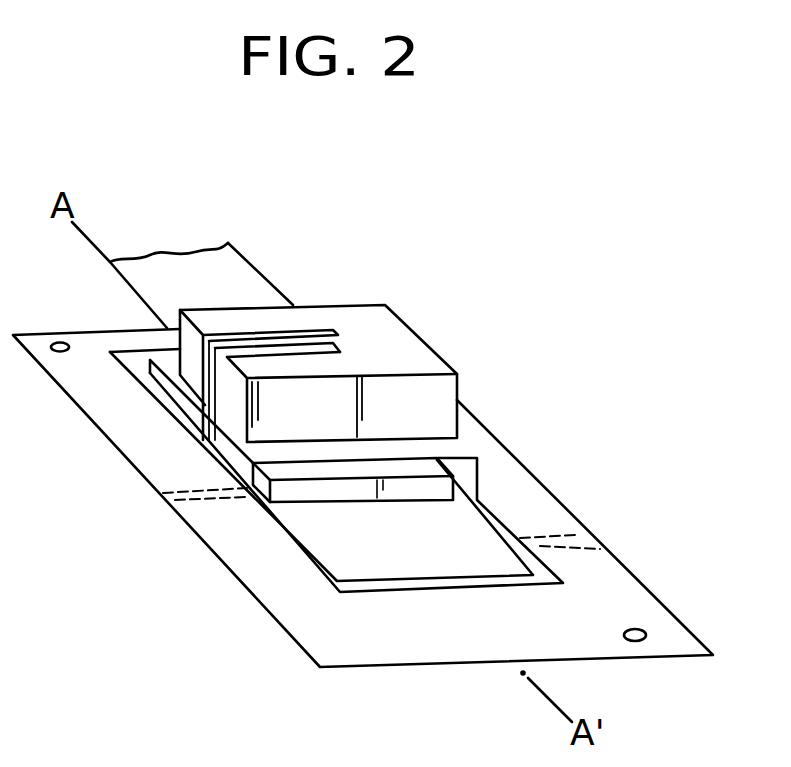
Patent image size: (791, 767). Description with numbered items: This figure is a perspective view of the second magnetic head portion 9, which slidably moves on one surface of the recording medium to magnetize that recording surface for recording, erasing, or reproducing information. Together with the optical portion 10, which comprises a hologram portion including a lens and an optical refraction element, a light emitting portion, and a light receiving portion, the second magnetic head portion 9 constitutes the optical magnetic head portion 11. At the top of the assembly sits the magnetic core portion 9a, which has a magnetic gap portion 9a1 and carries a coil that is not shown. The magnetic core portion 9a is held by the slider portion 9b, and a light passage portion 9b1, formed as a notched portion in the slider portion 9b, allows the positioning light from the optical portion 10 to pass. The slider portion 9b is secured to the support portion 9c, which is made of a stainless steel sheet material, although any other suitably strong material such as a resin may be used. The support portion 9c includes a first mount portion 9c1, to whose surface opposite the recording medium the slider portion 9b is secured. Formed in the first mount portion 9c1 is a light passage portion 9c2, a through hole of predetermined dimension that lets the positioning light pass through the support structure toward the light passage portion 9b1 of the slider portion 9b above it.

The second magnetic head portion 9 is at (405, 318).
The magnetic core portion 9a is at (317, 337).
The magnetic gap portion 9a1 is at (268, 332).
The slider portion 9b is at (443, 356).
The light passage portion 9b1 is at (365, 346).
The support portion 9c is at (537, 477).
The first mount portion 9c1 is at (473, 433).
The light passage portion 9c2 is at (625, 600).
The optical portion 10 is at (503, 522).
The optical magnetic head portion 11 is at (525, 302).